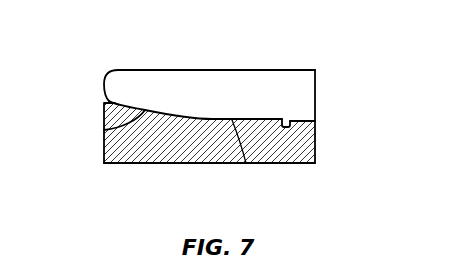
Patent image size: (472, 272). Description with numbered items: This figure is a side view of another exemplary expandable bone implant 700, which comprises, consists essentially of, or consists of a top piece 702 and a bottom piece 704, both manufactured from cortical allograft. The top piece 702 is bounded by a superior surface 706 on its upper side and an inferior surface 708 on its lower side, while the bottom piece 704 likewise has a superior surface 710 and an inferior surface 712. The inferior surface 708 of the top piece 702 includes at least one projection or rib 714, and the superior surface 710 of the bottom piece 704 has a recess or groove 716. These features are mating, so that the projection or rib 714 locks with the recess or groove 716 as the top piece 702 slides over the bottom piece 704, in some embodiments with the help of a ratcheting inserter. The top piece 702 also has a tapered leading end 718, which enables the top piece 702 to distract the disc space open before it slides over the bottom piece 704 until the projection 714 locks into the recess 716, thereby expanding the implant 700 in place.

The expandable bone implant 700 is at (363, 91).
The top piece 702 is at (320, 89).
The bottom piece 704 is at (320, 145).
The superior surface 706 is at (241, 70).
The inferior surface 708 is at (104, 130).
The superior surface 710 is at (246, 163).
The inferior surface 712 is at (193, 165).
The projection or rib 714 is at (286, 120).
The recess or groove 716 is at (291, 124).
The tapered leading end 718 is at (99, 88).